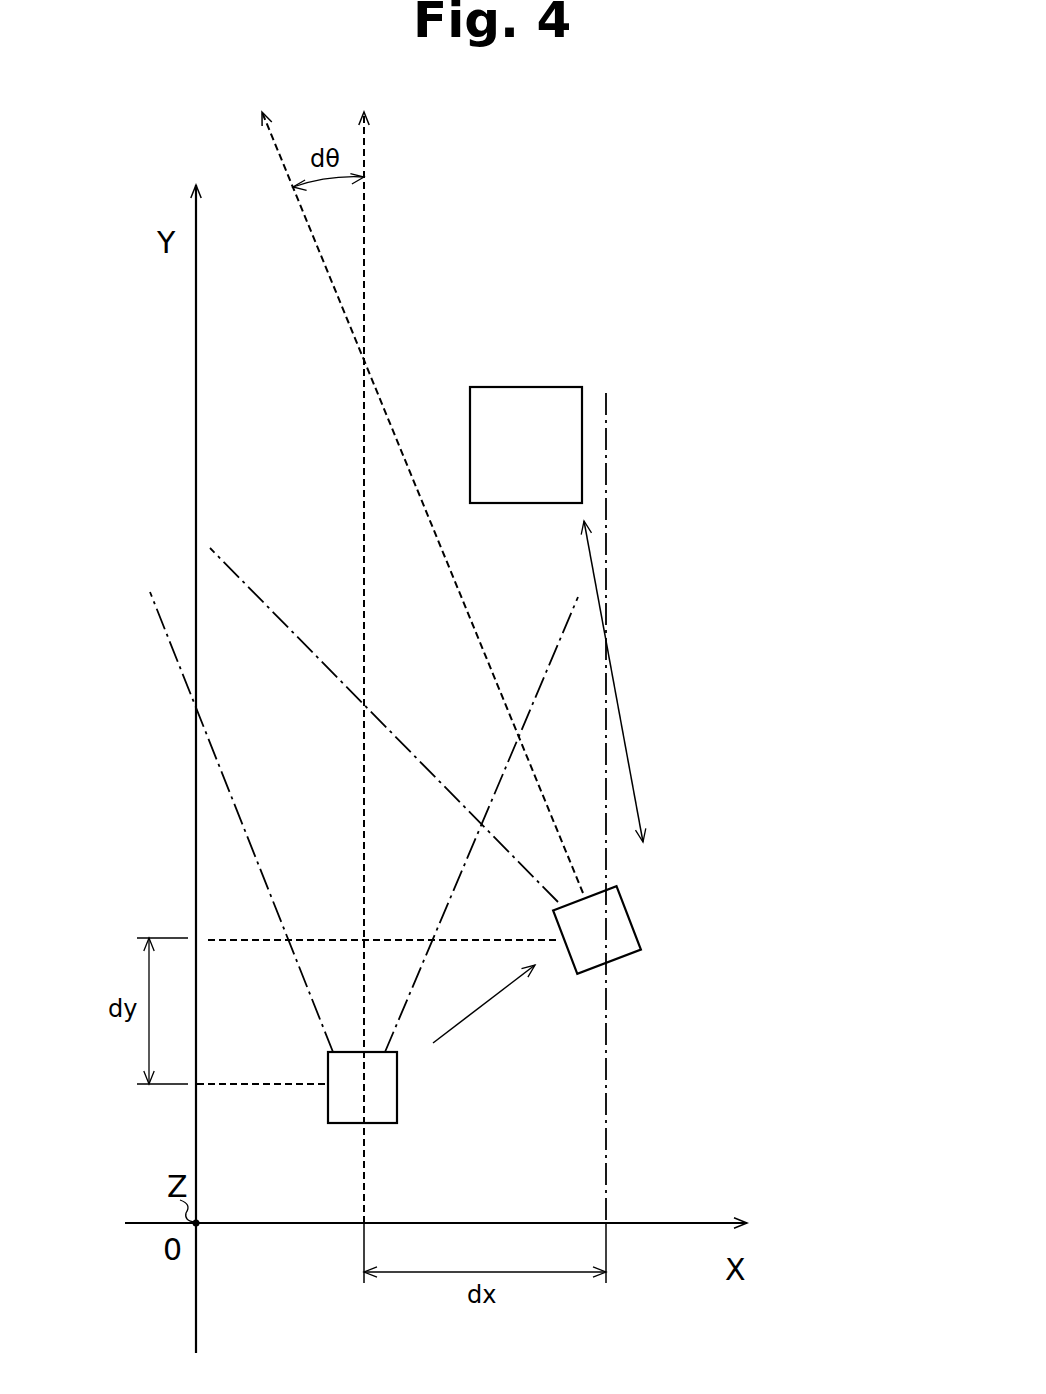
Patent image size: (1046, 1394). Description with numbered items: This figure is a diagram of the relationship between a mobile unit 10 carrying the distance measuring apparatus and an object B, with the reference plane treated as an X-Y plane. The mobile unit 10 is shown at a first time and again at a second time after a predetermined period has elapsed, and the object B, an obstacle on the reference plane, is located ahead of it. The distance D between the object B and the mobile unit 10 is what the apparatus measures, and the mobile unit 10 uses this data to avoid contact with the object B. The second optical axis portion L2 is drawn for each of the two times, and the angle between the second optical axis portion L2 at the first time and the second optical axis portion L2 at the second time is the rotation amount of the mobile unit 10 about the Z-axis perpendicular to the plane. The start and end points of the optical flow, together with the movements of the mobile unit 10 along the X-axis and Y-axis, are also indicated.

The mobile unit 10 is at (397, 1108).
The object B is at (550, 387).
The second optical axis portion L2 is at (385, 401).
The distance D is at (613, 681).